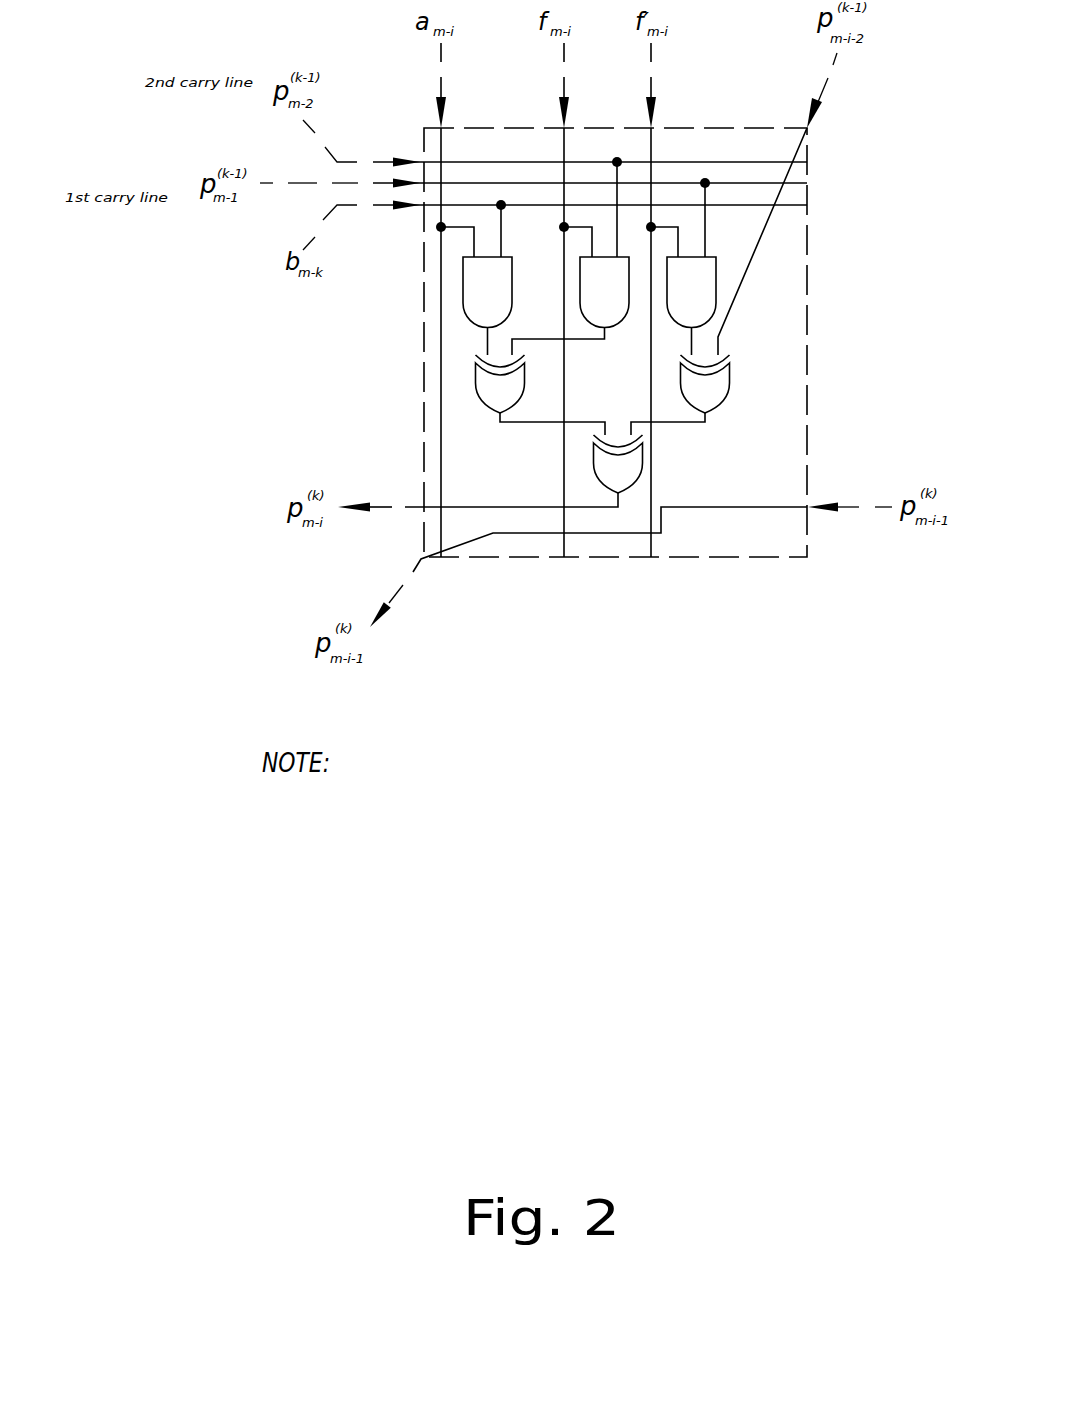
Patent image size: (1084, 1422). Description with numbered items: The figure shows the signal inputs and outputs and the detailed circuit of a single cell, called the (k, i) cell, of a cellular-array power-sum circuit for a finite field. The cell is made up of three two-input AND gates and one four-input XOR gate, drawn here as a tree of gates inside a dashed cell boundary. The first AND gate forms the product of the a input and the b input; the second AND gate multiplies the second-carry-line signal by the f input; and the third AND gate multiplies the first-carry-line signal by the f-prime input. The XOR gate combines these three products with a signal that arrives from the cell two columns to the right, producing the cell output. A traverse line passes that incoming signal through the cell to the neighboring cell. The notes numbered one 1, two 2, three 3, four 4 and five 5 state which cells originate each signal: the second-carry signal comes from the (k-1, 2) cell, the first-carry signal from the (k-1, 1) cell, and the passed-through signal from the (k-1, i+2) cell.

The note 1: p(k-1)m-2 output signal of the (k,i) cell 1 is at (521, 816).
The note 2: p(k)m-i-1 output signal of the (k,i+1) cell 2 is at (537, 892).
The note 3: p(k-1)m-i-2 output signal of the (k,-1,i+2) cell 3 is at (558, 968).
The note 4: p(k-1)m-2 output signal of the (k-1,2) cell 4 is at (540, 1039).
The note 5: p(k-1)m-1 output signal of the (k-1,1) cell 5 is at (540, 1109).